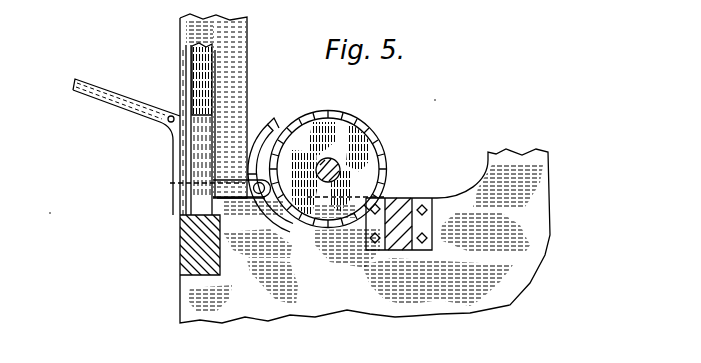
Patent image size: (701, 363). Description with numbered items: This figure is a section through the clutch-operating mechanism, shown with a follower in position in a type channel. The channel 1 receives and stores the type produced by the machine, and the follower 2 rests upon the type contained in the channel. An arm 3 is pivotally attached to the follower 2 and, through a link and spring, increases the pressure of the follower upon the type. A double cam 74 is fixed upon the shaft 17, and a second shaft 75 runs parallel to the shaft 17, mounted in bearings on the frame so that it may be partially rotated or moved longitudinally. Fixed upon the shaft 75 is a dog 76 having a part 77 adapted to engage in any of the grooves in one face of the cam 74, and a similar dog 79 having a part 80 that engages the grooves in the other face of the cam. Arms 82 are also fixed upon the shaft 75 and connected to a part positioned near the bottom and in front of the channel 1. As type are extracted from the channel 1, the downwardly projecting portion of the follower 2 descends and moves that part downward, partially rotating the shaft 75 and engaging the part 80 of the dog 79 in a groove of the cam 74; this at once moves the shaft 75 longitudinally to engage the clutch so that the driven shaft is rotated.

The channel 1 is at (196, 68).
The follower 2 is at (175, 163).
The arm 3 is at (118, 100).
The shaft 17 is at (340, 164).
The double cam 74 is at (365, 133).
The shaft 75 is at (256, 194).
The dog 76 is at (262, 136).
The part 77 is at (328, 161).
The dog 79 is at (278, 217).
The part 80 is at (308, 222).
The arm 82 is at (250, 180).